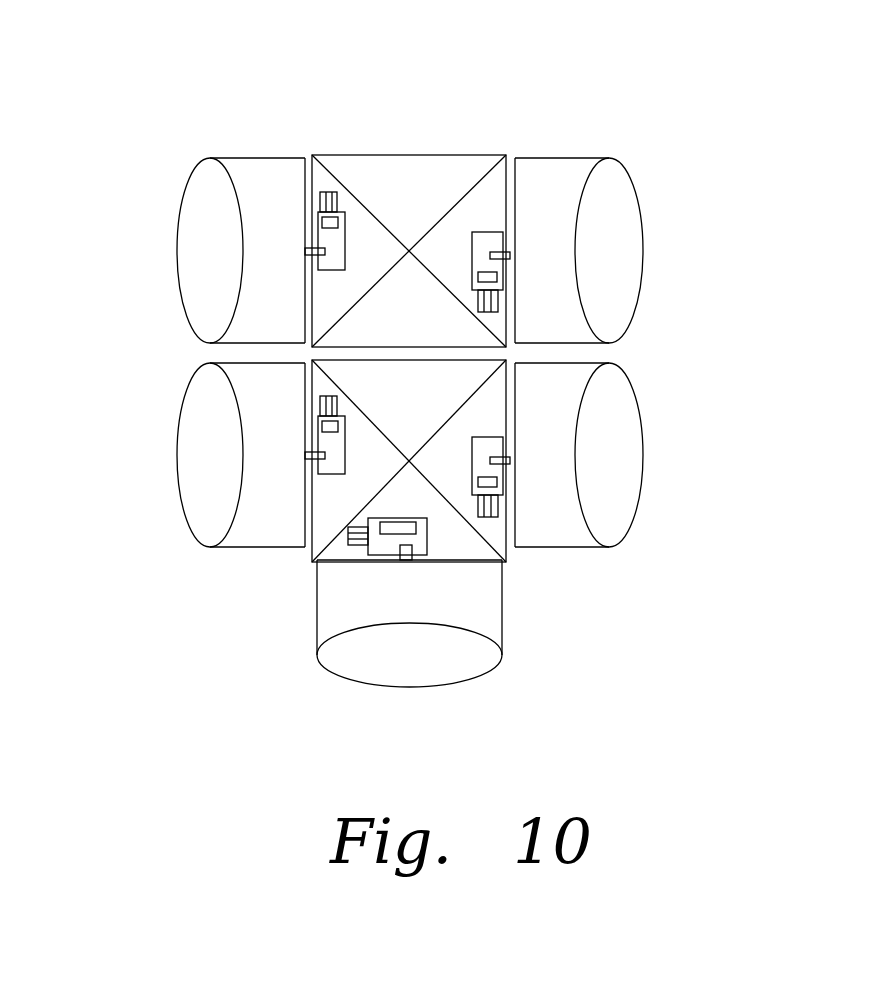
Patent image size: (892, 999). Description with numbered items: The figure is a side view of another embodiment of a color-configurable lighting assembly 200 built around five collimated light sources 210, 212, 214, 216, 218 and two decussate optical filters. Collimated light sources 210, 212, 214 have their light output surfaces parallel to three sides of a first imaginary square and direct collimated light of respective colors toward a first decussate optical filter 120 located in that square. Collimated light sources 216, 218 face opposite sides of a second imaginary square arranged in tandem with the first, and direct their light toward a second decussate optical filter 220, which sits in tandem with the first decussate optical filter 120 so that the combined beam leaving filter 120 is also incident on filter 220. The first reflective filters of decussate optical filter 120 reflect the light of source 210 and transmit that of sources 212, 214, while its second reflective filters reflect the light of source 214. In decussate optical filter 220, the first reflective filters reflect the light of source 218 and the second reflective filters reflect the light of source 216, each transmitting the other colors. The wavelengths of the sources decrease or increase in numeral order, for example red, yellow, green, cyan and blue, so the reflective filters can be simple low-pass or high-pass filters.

The color-configurable lighting assembly 200 is at (612, 102).
The first decussate optical filter 120 is at (432, 410).
The second decussate optical filter 220 is at (432, 203).
The collimated light source 210 is at (262, 433).
The collimated light source 212 is at (475, 612).
The collimated light source 214 is at (545, 455).
The collimated light source 216 is at (545, 262).
The collimated light source 218 is at (262, 252).